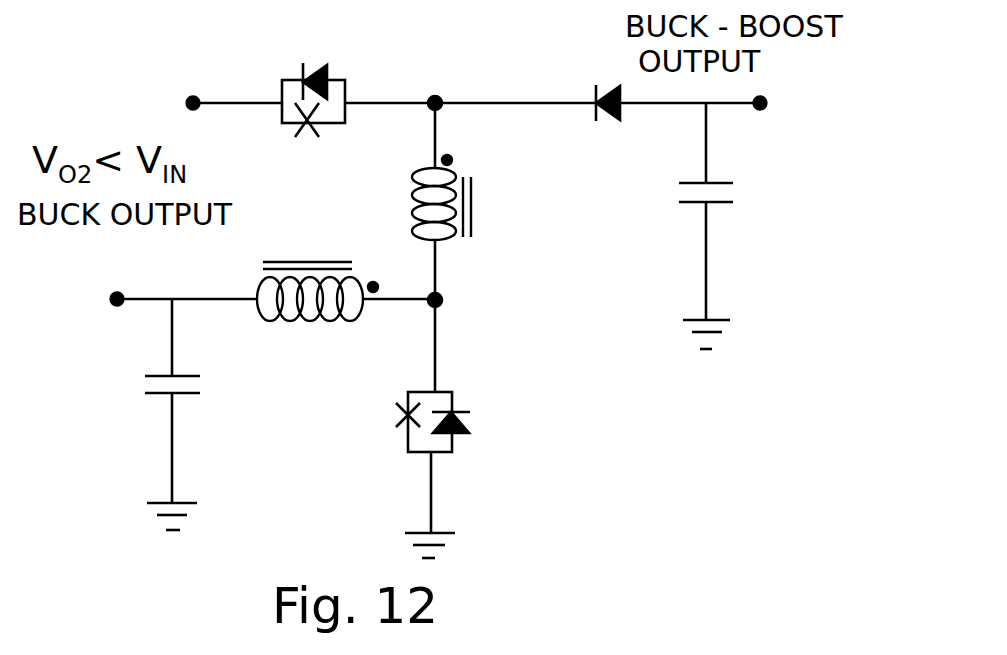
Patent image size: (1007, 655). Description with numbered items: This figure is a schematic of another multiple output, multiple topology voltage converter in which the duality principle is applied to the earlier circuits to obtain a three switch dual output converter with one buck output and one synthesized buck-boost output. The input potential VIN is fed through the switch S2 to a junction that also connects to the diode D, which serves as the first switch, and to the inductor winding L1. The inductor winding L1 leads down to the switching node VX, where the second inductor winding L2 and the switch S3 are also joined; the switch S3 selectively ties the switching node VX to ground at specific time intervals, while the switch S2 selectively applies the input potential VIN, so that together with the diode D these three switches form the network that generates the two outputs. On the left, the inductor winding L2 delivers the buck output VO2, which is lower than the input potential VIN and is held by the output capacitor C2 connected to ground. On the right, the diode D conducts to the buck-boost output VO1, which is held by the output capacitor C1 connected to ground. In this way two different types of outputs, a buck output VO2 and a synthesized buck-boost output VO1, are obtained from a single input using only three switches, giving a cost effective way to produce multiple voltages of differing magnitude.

The input potential VIN is at (163, 97).
The switch S2 is at (313, 127).
The diode D is at (589, 133).
The buck-boost output VO1 is at (811, 100).
The buck-boost output capacitor C1 is at (681, 226).
The inductor winding L1 is at (480, 202).
The switching node VX is at (469, 297).
The buck output VO2 is at (123, 269).
The inductor winding L2 is at (317, 316).
The buck output capacitor C2 is at (199, 414).
The switch S3 is at (465, 475).